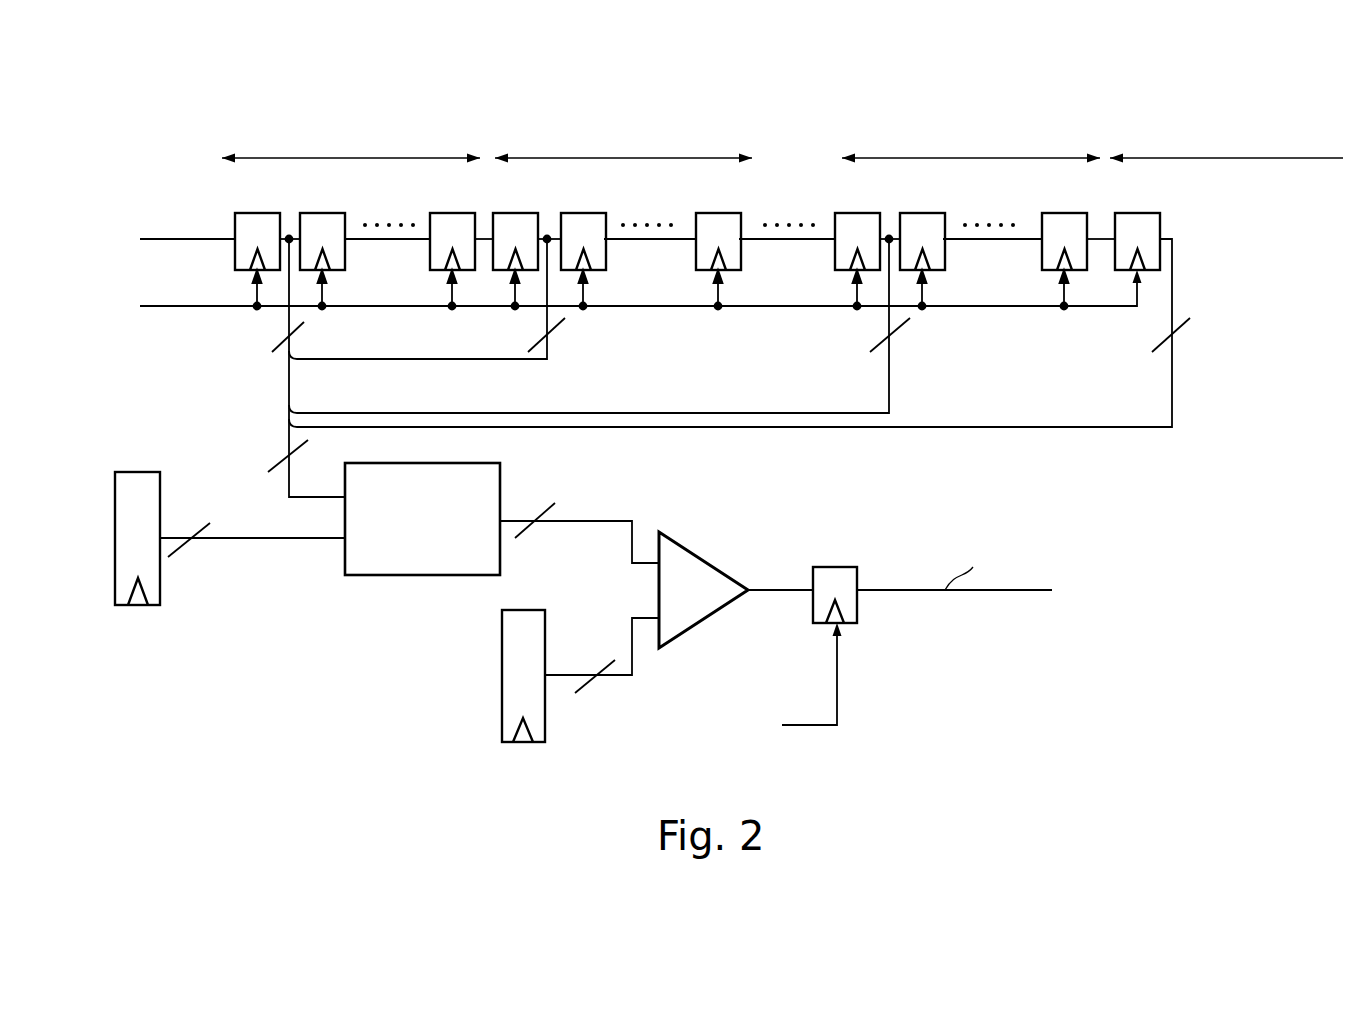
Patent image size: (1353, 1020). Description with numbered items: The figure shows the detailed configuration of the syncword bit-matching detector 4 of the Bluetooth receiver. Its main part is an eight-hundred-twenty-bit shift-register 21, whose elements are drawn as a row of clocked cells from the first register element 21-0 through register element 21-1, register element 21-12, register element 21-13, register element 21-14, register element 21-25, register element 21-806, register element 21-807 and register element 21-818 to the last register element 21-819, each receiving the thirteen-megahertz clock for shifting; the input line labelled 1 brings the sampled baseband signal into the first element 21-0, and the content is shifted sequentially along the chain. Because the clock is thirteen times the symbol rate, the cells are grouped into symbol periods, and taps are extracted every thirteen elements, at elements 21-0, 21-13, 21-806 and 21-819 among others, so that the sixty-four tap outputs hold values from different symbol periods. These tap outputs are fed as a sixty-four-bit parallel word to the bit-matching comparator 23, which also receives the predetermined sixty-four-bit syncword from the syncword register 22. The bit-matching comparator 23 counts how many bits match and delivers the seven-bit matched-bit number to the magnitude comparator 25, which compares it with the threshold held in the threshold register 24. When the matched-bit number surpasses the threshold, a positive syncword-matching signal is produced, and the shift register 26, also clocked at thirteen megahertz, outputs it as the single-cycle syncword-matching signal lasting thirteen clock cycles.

The input signal line S1 1 is at (200, 238).
The syncword bit-matching detector 4 is at (954, 629).
The shift-register 21 is at (1350, 110).
The first register element 21-0 is at (235, 257).
The register element 21-1 is at (345, 255).
The register element 21-12 is at (430, 270).
The register element 21-13 is at (493, 268).
The register element 21-14 is at (606, 255).
The register element 21-25 is at (697, 270).
The register element 21-806 is at (835, 270).
The register element 21-807 is at (944, 258).
The register element 21-818 is at (1042, 272).
The register element 21-819 is at (1160, 230).
The syncword register 22 is at (138, 471).
The bit-matching comparator 23 is at (380, 577).
The threshold register 24 is at (502, 703).
The magnitude comparator 25 is at (703, 557).
The shift register 26 is at (828, 568).